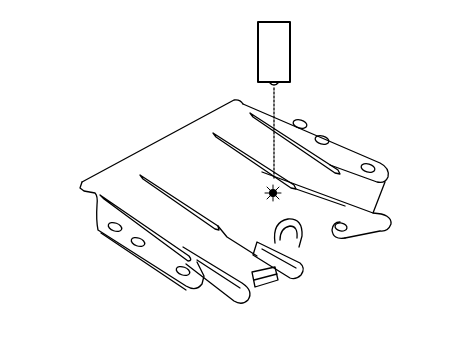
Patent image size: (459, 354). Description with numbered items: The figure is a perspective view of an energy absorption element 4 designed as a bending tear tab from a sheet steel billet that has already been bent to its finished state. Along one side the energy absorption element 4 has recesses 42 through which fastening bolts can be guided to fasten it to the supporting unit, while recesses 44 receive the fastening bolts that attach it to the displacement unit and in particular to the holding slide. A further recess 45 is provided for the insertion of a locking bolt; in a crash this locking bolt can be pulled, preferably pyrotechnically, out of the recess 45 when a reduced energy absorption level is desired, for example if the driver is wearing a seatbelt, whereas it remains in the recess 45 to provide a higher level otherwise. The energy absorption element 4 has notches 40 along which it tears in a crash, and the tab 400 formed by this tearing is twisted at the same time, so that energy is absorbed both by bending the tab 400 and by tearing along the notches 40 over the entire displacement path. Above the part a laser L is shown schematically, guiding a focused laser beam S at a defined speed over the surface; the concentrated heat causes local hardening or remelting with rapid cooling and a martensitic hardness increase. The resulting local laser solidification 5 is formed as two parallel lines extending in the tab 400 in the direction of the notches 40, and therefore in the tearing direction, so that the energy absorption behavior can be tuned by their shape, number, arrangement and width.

The energy absorption element 4 is at (147, 116).
The tab 400 is at (198, 178).
The notches 40 is at (148, 177).
The recesses 42 is at (105, 222).
The local laser solidification 5 is at (328, 177).
The recesses 44 is at (280, 282).
The recess 45 is at (292, 261).
The laser L is at (273, 72).
The laser beam S is at (273, 109).